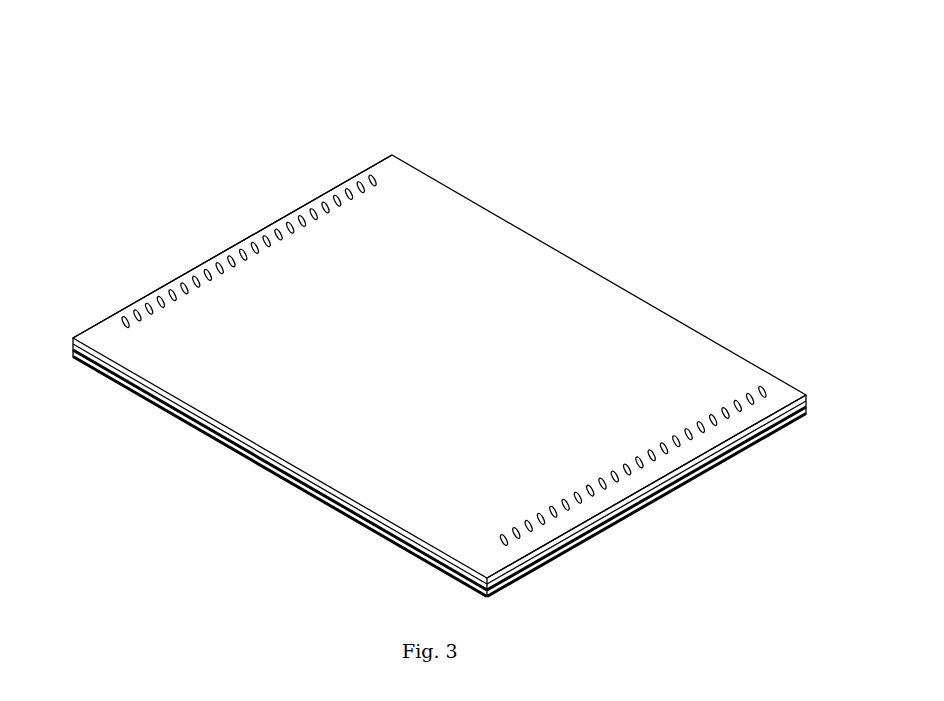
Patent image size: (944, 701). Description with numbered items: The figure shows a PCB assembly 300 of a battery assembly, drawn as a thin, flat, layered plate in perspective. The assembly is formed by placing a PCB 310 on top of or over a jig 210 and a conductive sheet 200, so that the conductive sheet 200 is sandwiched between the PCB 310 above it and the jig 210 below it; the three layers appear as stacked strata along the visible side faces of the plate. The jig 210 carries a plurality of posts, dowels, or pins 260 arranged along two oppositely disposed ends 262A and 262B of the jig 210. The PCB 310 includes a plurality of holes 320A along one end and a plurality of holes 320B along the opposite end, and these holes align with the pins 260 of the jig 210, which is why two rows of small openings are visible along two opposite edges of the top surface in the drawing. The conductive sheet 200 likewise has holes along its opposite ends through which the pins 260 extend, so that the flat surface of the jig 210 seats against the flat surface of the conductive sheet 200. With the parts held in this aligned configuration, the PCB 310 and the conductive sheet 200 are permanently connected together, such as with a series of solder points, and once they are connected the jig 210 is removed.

The PCB assembly 300 is at (323, 80).
The PCB 310 is at (578, 292).
The conductive sheet 200 is at (271, 460).
The jig 210 is at (385, 536).
The pins 260 is at (170, 279).
The first end of the jig 262A is at (239, 212).
The second end of the jig 262B is at (668, 524).
The first plurality of holes 320A is at (116, 321).
The second plurality of holes 320B is at (722, 439).